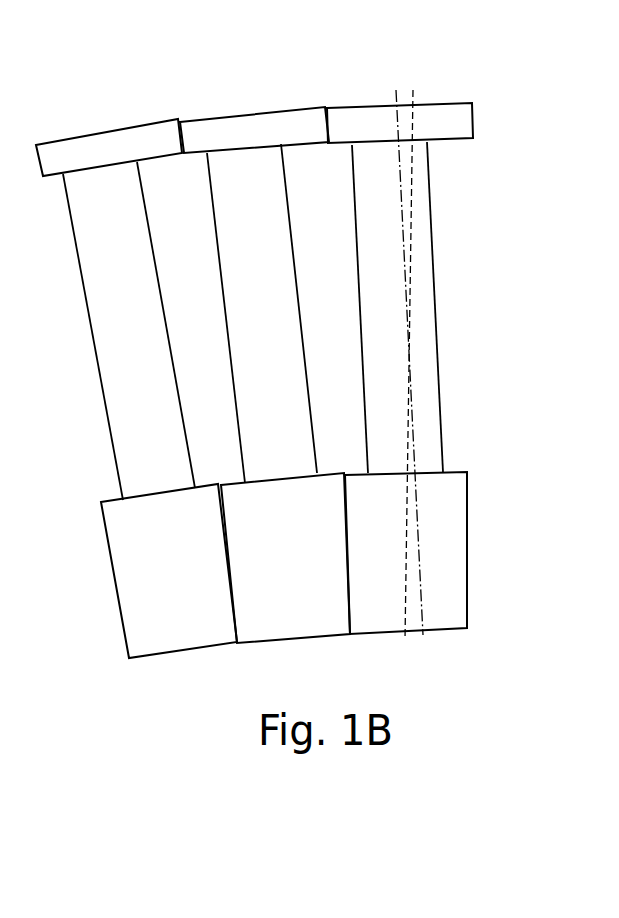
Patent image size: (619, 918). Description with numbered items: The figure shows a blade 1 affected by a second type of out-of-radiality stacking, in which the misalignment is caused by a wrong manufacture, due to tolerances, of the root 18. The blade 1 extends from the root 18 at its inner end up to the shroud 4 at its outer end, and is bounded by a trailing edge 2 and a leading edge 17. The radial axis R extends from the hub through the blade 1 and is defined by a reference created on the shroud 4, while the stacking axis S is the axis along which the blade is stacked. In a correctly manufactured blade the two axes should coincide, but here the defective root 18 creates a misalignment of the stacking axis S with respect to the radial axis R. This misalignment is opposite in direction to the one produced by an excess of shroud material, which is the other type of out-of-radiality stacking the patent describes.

The blade 1 is at (315, 272).
The trailing edge 2 is at (430, 188).
The shroud 4 is at (458, 124).
The leading edge 17 is at (348, 202).
The root 18 is at (446, 553).
The stacking axis S is at (393, 98).
The radial axis R is at (417, 93).